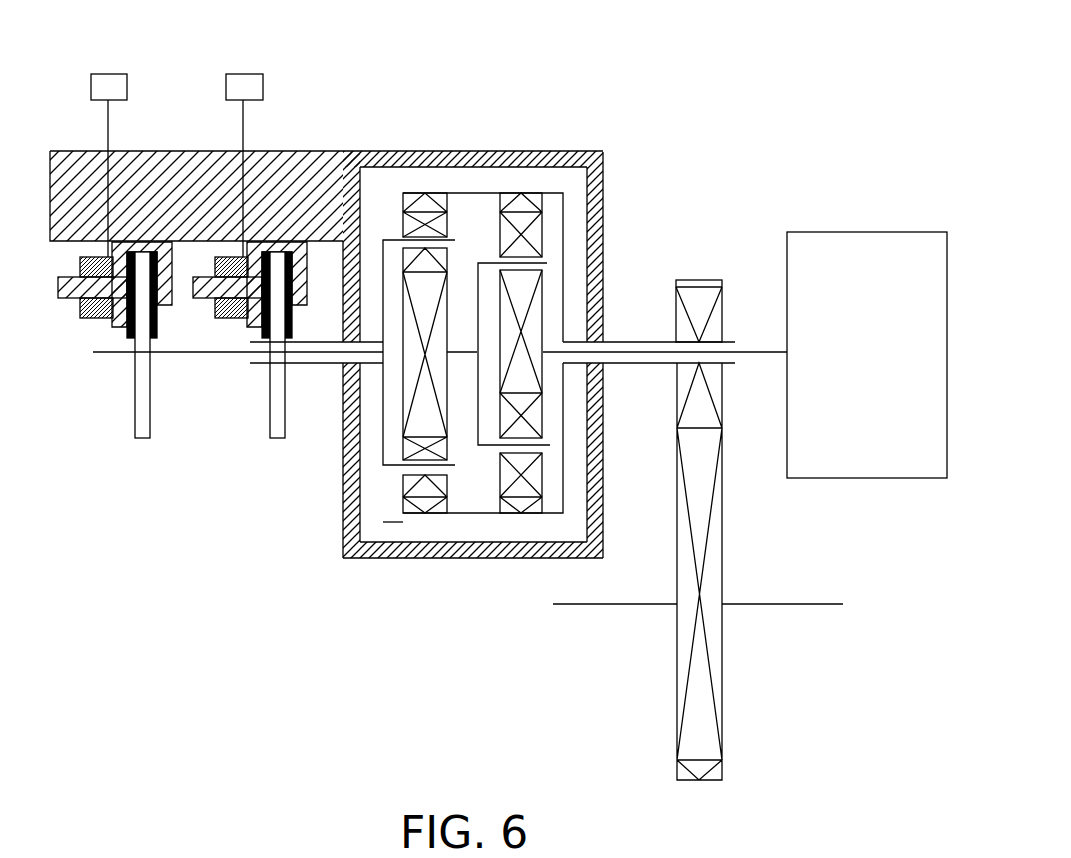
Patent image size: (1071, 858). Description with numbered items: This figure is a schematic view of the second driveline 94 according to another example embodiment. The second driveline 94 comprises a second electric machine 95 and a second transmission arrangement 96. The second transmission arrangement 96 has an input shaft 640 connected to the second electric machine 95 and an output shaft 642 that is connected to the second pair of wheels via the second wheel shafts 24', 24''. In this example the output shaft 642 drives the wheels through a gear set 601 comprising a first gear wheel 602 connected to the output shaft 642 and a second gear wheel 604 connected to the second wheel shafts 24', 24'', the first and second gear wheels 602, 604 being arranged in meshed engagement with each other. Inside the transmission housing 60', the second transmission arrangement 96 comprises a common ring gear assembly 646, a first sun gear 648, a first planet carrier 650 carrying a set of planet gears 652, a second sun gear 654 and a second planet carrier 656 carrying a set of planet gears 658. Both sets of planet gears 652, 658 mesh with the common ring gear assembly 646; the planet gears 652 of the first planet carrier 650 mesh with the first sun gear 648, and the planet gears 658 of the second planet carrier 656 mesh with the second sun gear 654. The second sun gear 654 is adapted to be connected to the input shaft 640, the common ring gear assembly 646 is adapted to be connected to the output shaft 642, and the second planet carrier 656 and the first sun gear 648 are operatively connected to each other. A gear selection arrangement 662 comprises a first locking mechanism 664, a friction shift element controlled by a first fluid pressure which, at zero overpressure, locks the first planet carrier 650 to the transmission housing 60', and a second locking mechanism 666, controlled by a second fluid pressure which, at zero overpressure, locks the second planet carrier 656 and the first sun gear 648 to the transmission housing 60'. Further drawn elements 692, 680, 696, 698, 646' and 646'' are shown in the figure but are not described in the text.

The transmission housing 60' is at (186, 155).
The sensor 692 is at (108, 74).
The sensor 680 is at (241, 74).
The second locking mechanism 666 is at (181, 259).
The first locking mechanism 664 is at (315, 256).
The gear selection arrangement 662 is at (110, 399).
The second driveline 94 is at (632, 176).
The second transmission arrangement 96 is at (578, 136).
The housing bottom wall 696 is at (440, 558).
The housing cavity 698 is at (383, 522).
The input shaft 640 is at (757, 352).
The first planet carrier 650 is at (447, 473).
The first sun gear 648 is at (402, 422).
The first gear 646' is at (407, 273).
The set of planet gears 652 is at (402, 487).
The bearing 646'' is at (484, 143).
The common ring gear assembly 646 is at (477, 248).
The set of planet gears 658 is at (495, 420).
The second sun gear 654 is at (540, 327).
The second planet carrier 656 is at (547, 265).
The output shaft 642 is at (642, 342).
The second electric machine 95 is at (873, 232).
The first gear wheel 602 is at (722, 397).
The gear set 601 is at (748, 542).
The second gear wheel 604 is at (722, 675).
The second wheel shaft 24' is at (615, 639).
The second wheel shaft 24'' is at (789, 639).